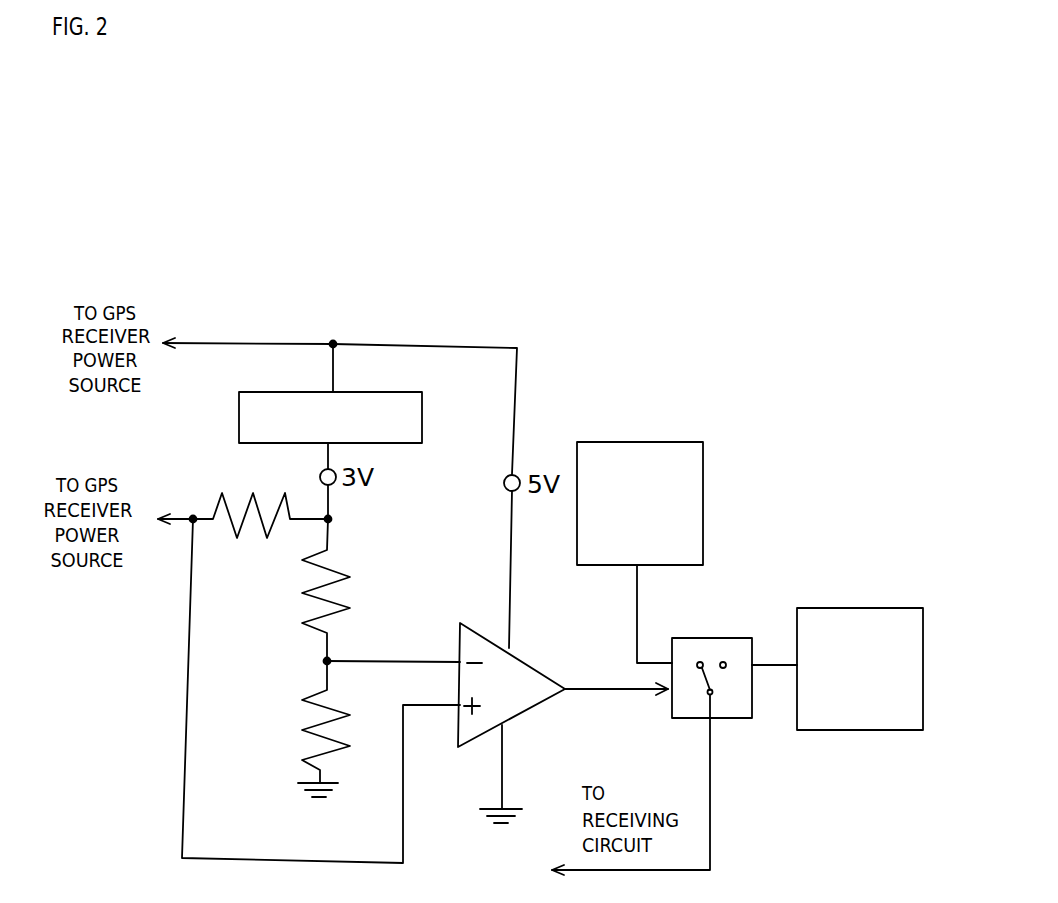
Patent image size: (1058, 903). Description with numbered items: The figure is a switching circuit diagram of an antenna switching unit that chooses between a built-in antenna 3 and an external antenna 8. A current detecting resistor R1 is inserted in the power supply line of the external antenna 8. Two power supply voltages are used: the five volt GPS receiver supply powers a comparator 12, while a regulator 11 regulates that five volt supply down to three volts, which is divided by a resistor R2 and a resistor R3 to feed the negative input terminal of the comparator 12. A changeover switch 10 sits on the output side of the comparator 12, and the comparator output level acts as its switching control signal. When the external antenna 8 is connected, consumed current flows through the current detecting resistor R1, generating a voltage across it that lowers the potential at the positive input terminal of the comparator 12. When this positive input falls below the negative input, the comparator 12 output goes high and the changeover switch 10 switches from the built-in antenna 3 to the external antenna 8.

The built-in antenna 3 is at (647, 441).
The external antenna 8 is at (868, 607).
The changeover switch 10 is at (713, 637).
The regulator 11 is at (408, 445).
The comparator 12 is at (530, 663).
The current detecting resistor R1 is at (260, 501).
The resistor R2 is at (346, 590).
The resistor R3 is at (343, 722).